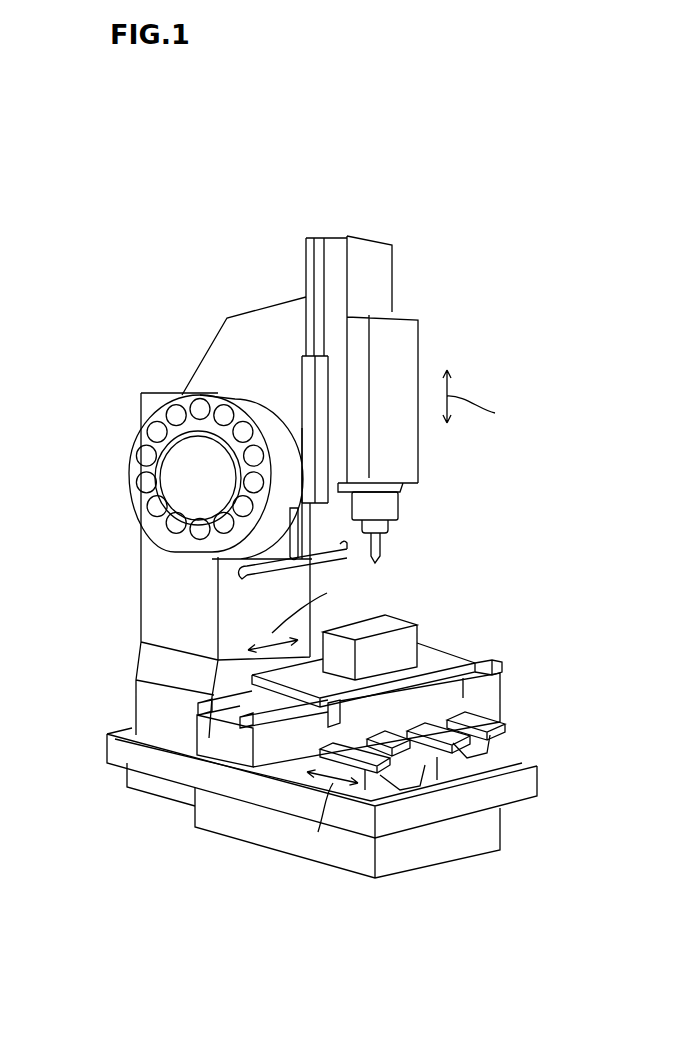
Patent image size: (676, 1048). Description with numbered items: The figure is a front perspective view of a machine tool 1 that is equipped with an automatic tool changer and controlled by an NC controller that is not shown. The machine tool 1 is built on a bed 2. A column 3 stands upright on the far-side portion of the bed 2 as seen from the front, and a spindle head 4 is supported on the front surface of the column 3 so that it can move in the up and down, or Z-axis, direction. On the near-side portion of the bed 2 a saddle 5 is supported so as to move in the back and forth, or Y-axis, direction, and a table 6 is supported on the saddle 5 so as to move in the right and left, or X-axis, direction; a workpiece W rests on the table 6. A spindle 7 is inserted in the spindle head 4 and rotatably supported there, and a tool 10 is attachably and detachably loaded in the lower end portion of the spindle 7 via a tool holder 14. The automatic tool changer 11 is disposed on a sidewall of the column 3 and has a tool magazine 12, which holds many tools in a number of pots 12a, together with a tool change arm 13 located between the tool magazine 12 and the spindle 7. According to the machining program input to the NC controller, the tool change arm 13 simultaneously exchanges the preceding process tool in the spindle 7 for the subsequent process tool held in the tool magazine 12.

The machine tool 1 is at (302, 179).
The bed 2 is at (544, 805).
The column 3 is at (226, 309).
The spindle head 4 is at (424, 312).
The saddle 5 is at (270, 750).
The table 6 is at (240, 667).
The spindle 7 is at (408, 509).
The tool 10 is at (387, 553).
The automatic tool changer 11 is at (165, 592).
The tool magazine 12 is at (122, 428).
The pot 12a is at (130, 490).
The tool change arm 13 is at (236, 573).
The tool holder 14 is at (390, 528).
The workpiece W is at (400, 613).